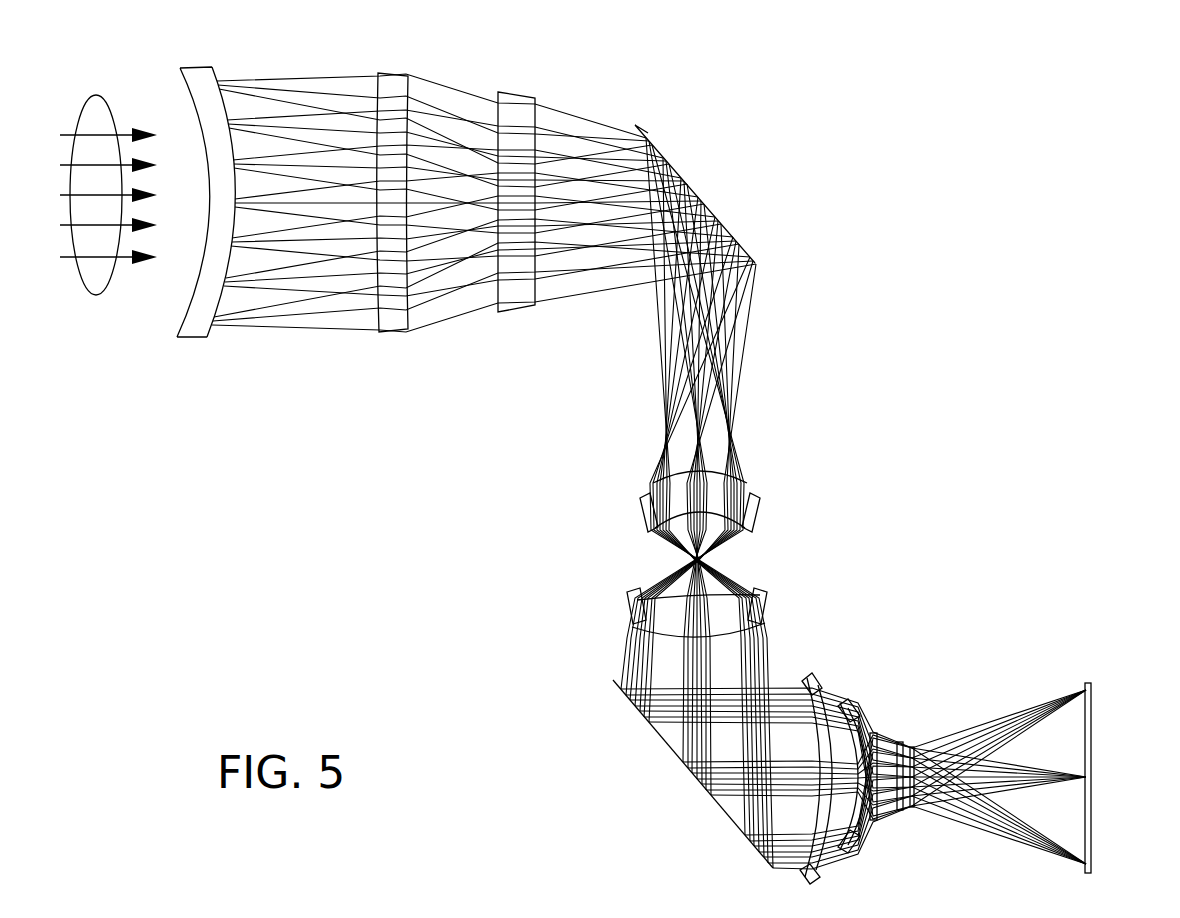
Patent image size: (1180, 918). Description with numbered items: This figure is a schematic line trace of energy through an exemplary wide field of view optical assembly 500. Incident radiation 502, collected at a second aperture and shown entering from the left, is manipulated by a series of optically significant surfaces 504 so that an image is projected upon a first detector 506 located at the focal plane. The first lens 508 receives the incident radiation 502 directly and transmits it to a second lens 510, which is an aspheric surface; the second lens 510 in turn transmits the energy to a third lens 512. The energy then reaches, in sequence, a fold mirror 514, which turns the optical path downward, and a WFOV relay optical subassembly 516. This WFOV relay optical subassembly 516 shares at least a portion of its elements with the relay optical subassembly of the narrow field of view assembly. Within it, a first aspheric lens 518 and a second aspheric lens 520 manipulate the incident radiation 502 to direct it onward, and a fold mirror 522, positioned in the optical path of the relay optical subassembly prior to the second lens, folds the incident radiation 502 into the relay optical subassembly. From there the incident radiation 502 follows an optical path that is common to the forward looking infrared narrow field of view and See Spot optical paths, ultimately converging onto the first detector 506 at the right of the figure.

The wide field of view optical assembly 500 is at (952, 158).
The incident radiation 502 is at (97, 94).
The optically significant surfaces 504 is at (472, 82).
The first detector 506 is at (1092, 703).
The first lens 508 is at (197, 328).
The second lens 510 is at (390, 328).
The third lens 512 is at (520, 110).
The fold mirror 514 is at (690, 187).
The WFOV relay optical subassembly 516 is at (597, 614).
The first aspheric lens 518 is at (645, 505).
The second aspheric lens 520 is at (635, 605).
The fold mirror 522 is at (685, 770).